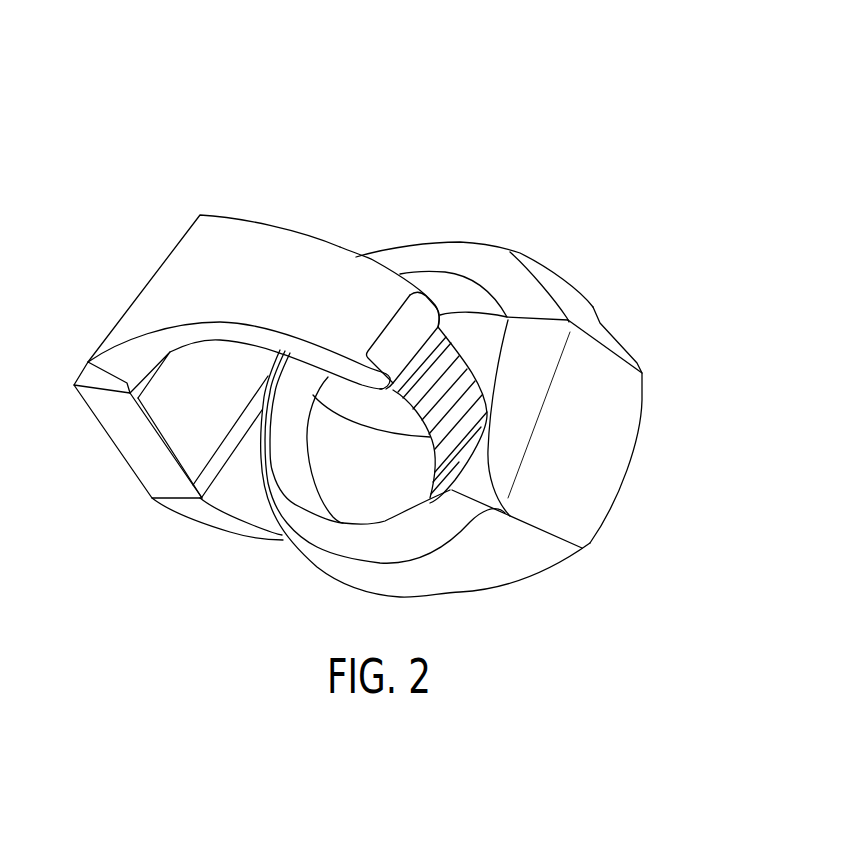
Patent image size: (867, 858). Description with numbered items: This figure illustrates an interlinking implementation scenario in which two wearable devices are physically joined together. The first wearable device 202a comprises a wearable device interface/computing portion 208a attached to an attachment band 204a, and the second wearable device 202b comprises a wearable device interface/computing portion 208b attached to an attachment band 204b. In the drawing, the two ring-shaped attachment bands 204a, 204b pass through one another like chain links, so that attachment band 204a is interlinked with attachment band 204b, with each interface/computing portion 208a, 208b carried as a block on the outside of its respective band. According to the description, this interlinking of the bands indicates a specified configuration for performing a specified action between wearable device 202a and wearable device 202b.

The wearable device 202a is at (128, 85).
The wearable device 202b is at (668, 172).
The attachment band 204a is at (273, 223).
The attachment band 204b is at (472, 242).
The wearable device interface/computing portion 208a is at (130, 444).
The wearable device interface/computing portion 208b is at (600, 485).